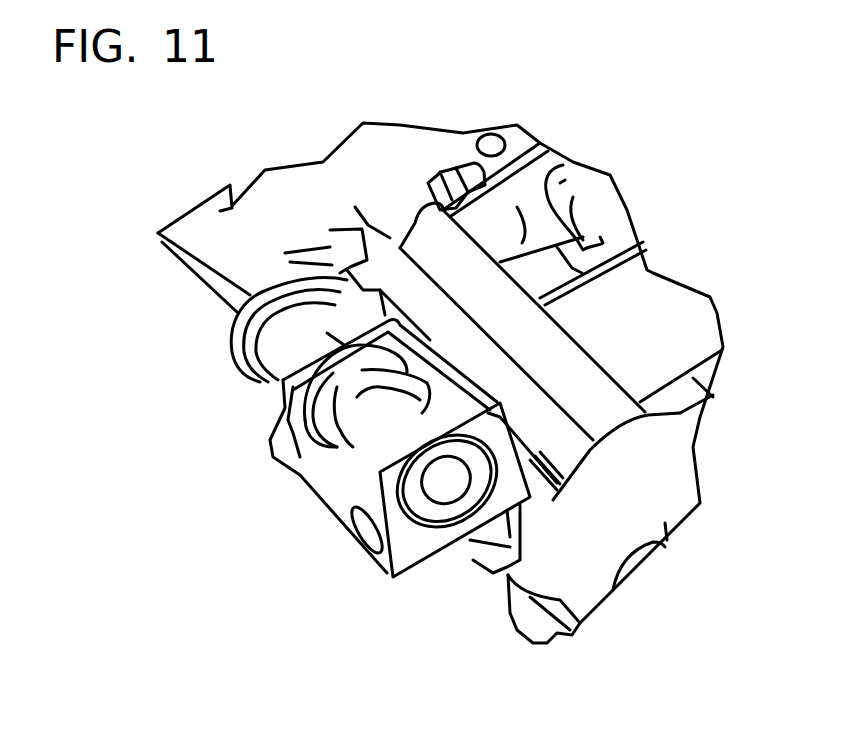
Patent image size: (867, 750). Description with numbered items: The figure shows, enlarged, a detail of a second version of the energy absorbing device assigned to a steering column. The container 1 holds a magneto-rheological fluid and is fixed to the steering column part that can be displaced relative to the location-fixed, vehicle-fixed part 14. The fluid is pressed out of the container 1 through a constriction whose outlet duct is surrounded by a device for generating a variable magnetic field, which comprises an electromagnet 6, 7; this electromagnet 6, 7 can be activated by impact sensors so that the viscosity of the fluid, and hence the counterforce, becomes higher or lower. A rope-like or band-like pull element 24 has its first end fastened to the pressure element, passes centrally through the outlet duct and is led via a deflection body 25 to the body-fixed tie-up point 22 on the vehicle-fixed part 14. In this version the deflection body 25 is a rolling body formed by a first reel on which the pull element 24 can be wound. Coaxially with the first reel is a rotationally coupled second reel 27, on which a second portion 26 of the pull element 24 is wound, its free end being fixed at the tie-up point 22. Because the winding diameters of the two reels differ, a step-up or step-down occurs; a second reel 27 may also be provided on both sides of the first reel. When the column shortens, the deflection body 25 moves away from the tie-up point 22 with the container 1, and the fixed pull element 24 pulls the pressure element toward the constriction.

The container 1 is at (655, 320).
The vehicle-fixed part 14 is at (447, 273).
The tie-up point 22 is at (405, 218).
The second portion of the pull element 26 is at (250, 295).
The second reel 27 is at (280, 333).
The deflection body 25 is at (322, 419).
The pull element 24 is at (293, 482).
The electromagnet 7 is at (495, 535).
The electromagnet 6 is at (488, 556).